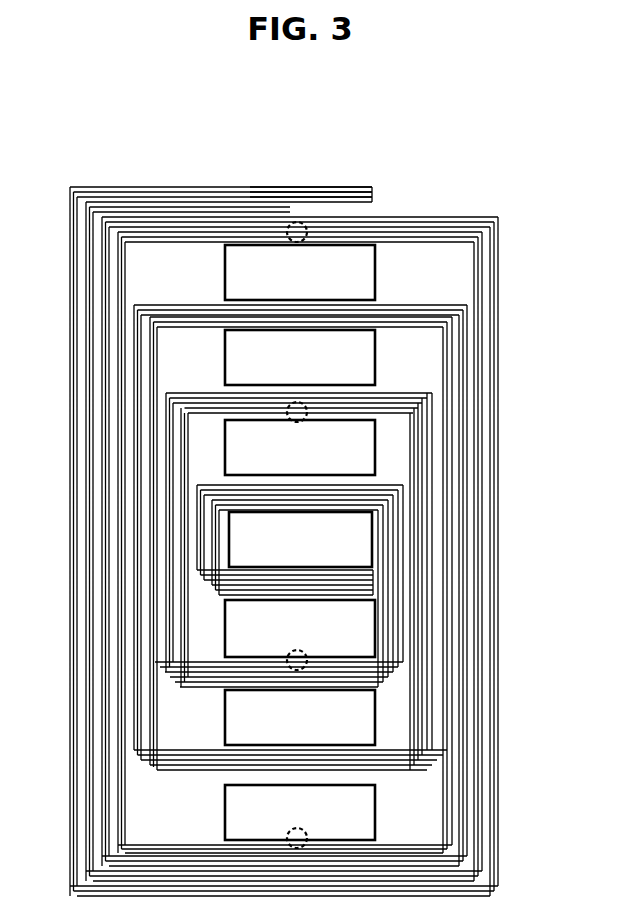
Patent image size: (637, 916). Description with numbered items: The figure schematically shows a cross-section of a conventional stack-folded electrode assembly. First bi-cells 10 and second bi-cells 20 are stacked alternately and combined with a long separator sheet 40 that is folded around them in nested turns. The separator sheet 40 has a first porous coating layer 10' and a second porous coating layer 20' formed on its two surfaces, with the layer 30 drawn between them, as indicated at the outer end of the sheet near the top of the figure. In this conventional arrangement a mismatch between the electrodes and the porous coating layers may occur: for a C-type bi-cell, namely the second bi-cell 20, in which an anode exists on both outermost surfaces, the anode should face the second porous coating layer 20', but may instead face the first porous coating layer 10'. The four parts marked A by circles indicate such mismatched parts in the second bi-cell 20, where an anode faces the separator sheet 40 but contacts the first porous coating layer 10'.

The separator sheet 40 is at (265, 138).
The second porous coating layer 20' is at (311, 165).
The intermediate separator layer 30 is at (318, 192).
The first porous coating layer 10' is at (311, 171).
The second bi-cell 20 is at (300, 542).
The first bi-cell 10 is at (300, 537).
The mismatched part A is at (292, 404).